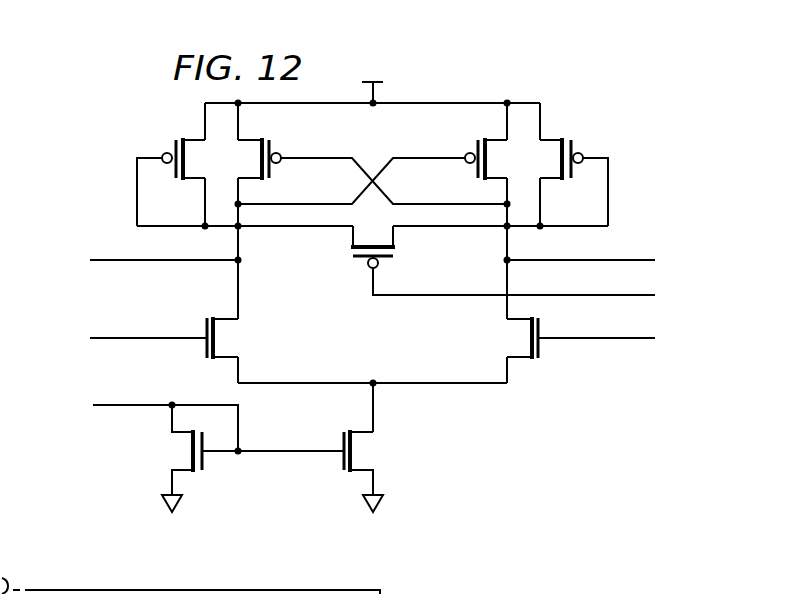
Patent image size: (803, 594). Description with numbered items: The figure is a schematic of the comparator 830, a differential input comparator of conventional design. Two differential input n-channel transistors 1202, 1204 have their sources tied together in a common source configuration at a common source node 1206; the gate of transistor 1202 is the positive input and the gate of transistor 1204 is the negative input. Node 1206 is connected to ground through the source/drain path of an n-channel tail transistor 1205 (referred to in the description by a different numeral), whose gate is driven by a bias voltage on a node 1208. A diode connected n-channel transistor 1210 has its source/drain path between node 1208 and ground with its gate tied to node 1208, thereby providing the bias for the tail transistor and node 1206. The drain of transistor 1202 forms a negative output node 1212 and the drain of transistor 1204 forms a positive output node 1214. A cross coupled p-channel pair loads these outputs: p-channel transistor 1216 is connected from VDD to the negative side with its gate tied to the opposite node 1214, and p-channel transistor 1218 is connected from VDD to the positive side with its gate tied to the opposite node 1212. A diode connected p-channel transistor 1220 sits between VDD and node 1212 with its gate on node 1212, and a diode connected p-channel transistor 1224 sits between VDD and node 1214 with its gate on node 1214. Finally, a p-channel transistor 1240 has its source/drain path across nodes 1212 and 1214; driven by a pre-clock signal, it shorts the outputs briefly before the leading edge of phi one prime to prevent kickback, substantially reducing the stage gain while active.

The comparator 830 is at (572, 90).
The differential input n-channel transistor 1202 is at (205, 352).
The differential input n-channel transistor 1204 is at (540, 352).
The current source transistor 1205 is at (342, 440).
The common source node 1206 is at (378, 387).
The bias voltage node 1208 is at (127, 408).
The diode connected n-channel transistor 1210 is at (203, 457).
The negative output node 1212 is at (128, 260).
The positive output node 1214 is at (630, 260).
The p-channel transistor 1216 is at (273, 148).
The p-channel transistor 1218 is at (474, 148).
The diode connected p-channel transistor 1220 is at (172, 148).
The diode connected p-channel transistor 1224 is at (576, 148).
The p-channel transistor 1240 is at (363, 257).